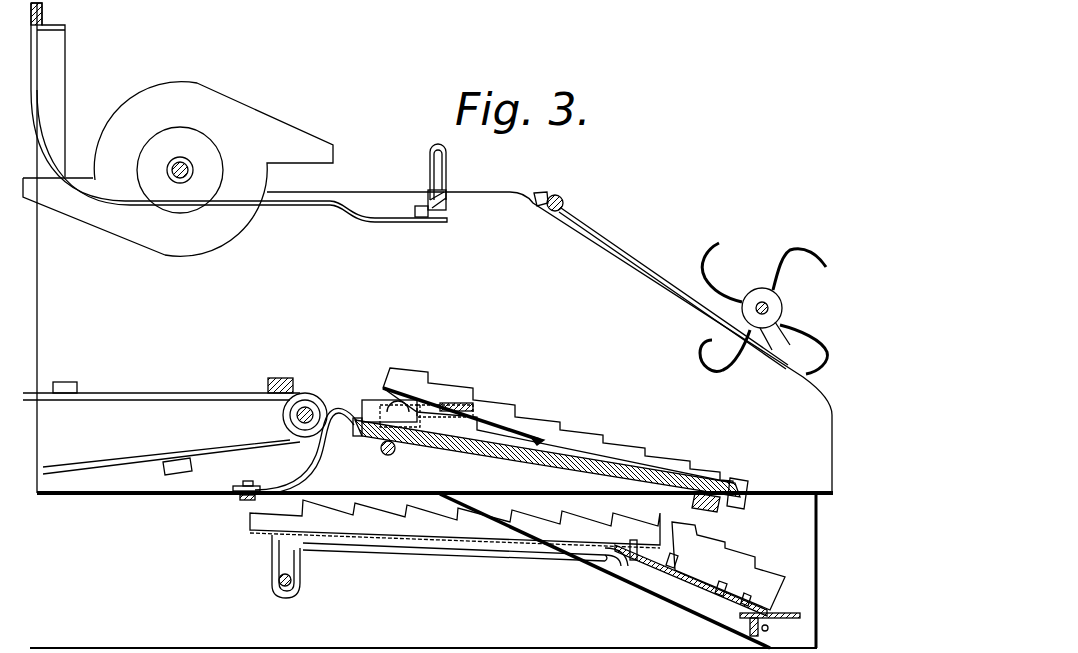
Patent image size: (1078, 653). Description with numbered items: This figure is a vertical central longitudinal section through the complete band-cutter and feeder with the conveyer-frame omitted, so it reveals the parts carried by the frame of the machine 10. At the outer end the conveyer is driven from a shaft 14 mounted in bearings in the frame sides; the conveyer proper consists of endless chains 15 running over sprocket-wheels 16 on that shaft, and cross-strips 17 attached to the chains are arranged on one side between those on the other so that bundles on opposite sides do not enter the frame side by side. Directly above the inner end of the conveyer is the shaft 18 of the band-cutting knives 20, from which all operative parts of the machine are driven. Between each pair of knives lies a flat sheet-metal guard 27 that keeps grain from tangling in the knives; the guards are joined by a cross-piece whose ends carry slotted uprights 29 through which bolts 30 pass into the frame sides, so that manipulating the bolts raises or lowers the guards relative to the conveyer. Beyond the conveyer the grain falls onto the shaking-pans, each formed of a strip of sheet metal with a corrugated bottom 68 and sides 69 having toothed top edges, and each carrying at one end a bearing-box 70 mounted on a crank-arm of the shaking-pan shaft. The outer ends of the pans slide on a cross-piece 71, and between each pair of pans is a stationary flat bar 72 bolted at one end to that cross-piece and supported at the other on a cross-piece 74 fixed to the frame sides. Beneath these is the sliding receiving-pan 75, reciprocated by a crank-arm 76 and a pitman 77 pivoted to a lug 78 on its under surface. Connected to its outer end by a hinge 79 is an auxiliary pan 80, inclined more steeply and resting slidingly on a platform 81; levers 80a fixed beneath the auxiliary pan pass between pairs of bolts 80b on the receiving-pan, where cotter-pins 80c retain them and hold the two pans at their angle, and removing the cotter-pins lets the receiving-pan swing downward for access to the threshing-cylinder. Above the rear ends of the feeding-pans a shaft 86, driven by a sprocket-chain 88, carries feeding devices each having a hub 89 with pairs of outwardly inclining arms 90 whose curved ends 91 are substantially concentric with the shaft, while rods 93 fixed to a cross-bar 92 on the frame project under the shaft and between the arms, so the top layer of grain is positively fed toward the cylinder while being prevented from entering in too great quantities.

The frame of the machine 10 is at (428, 325).
The shaft 14 is at (297, 410).
The endless chains 15 is at (177, 400).
The sprocket-wheels 16 is at (305, 403).
The cross-strips 17 is at (187, 460).
The shaft of the band-cutting knives 18 is at (197, 173).
The band-cutting knives 20 is at (213, 169).
The guard 27 is at (383, 220).
The slotted uprights 29 is at (447, 177).
The bolts 30 is at (447, 200).
The corrugated bottom 68 is at (463, 405).
The sides 69 is at (533, 417).
The bearing-box 70 is at (383, 388).
The cross-piece 71 is at (720, 512).
The stationary flat bar 72 is at (530, 463).
The cross-piece 74 is at (258, 487).
The receiving-pan 75 is at (455, 524).
The crank-arm 76 is at (303, 558).
The pitman 77 is at (470, 552).
The lug 78 is at (607, 567).
The hinge 79 is at (663, 545).
The auxiliary pan 80 is at (700, 570).
The levers 80a is at (747, 605).
The bolts 80b is at (628, 566).
The cotter-pin 80c is at (635, 558).
The platform 81 is at (767, 623).
The shaft 86 is at (772, 308).
The sprocket-chain 88 is at (768, 342).
The hub 89 is at (755, 297).
The arms 90 is at (725, 365).
The curved ends 91 is at (707, 367).
The cross-bar 92 is at (567, 202).
The rods 93 is at (647, 273).